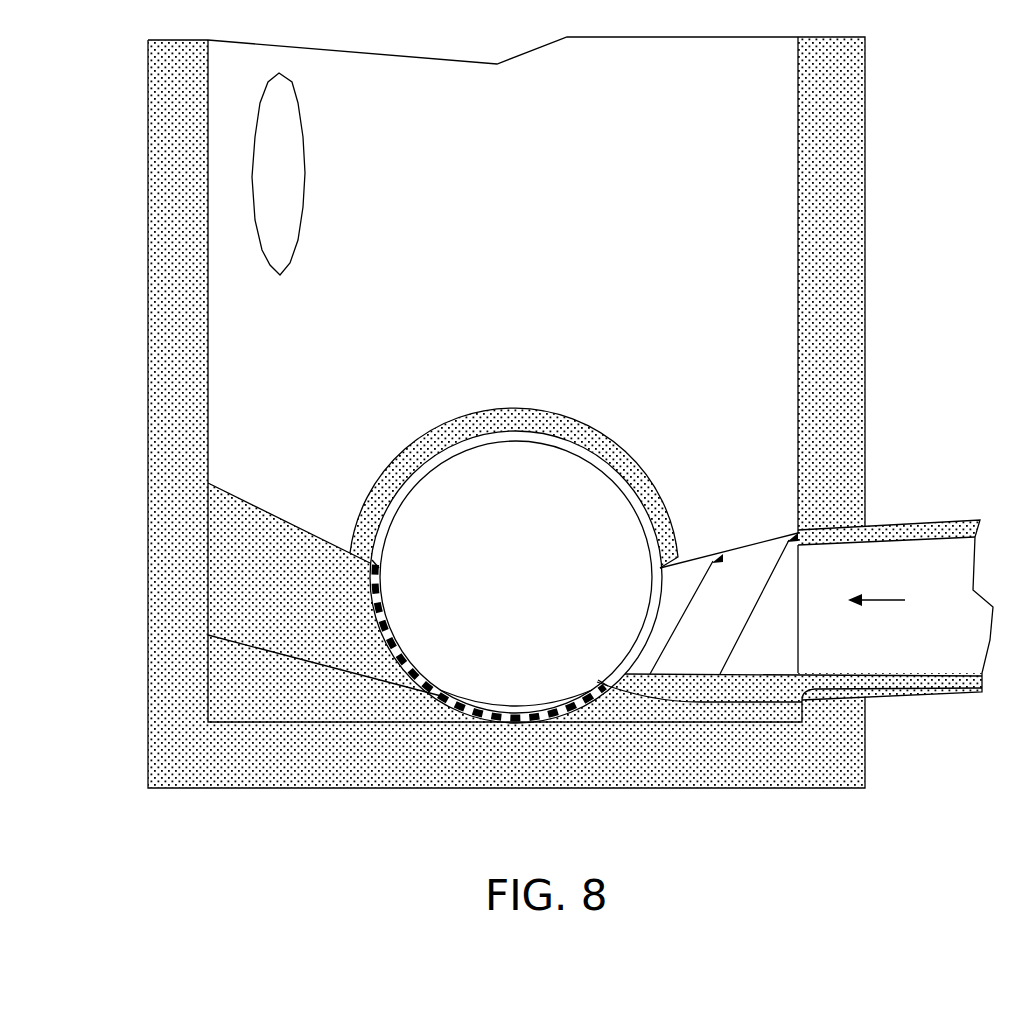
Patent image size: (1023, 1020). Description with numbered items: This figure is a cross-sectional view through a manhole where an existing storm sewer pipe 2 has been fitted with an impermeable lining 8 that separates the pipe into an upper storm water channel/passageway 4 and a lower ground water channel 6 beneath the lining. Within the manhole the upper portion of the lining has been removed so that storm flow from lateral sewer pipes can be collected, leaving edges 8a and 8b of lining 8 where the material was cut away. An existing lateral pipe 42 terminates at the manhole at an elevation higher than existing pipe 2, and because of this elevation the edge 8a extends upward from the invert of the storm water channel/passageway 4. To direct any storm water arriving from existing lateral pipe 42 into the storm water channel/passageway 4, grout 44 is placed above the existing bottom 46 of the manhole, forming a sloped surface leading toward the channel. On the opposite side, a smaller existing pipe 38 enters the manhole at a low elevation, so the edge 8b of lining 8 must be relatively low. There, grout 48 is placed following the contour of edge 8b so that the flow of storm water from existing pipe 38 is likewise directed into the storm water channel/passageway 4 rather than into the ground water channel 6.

The existing storm sewer pipe 2 is at (593, 445).
The storm water channel/passageway 4 is at (521, 576).
The ground water channel 6 is at (533, 710).
The impermeable lining 8 is at (378, 588).
The edge of lining 8a is at (377, 563).
The edge of lining 8b is at (607, 677).
The existing pipe 38 is at (878, 533).
The existing lateral pipe 42 is at (292, 175).
The grout 44 is at (273, 528).
The existing bottom of manhole 46 is at (292, 708).
The grout 48 is at (645, 693).